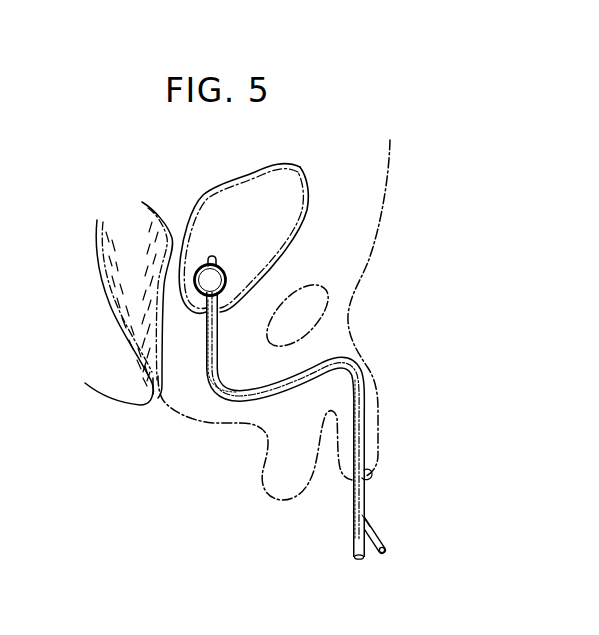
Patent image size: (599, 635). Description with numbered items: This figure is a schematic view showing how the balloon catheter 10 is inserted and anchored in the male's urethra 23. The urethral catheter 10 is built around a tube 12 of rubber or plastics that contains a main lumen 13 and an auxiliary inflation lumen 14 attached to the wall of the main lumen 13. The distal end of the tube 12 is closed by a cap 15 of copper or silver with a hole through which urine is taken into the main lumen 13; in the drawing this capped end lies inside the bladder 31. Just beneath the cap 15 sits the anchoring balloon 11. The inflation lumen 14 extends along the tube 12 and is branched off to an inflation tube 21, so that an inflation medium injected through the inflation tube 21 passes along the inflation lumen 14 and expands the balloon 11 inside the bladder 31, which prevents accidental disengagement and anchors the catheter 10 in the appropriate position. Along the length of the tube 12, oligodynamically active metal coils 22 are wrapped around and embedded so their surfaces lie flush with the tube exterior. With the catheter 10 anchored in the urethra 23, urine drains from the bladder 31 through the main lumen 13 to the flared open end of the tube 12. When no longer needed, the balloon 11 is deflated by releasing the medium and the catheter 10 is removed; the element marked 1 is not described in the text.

The urethral catheter 1 is at (361, 460).
The urethral catheter 10 is at (299, 404).
The anchoring balloon 11 is at (228, 270).
The tube 12 is at (299, 445).
The main lumen 13 is at (361, 561).
The inflation lumen 14 is at (385, 553).
The cap 15 is at (212, 256).
The inflation tube 21 is at (369, 530).
The oligodynamically active metal coil 22 is at (219, 321).
The male's urethra 23 is at (216, 382).
The bladder 31 is at (246, 205).